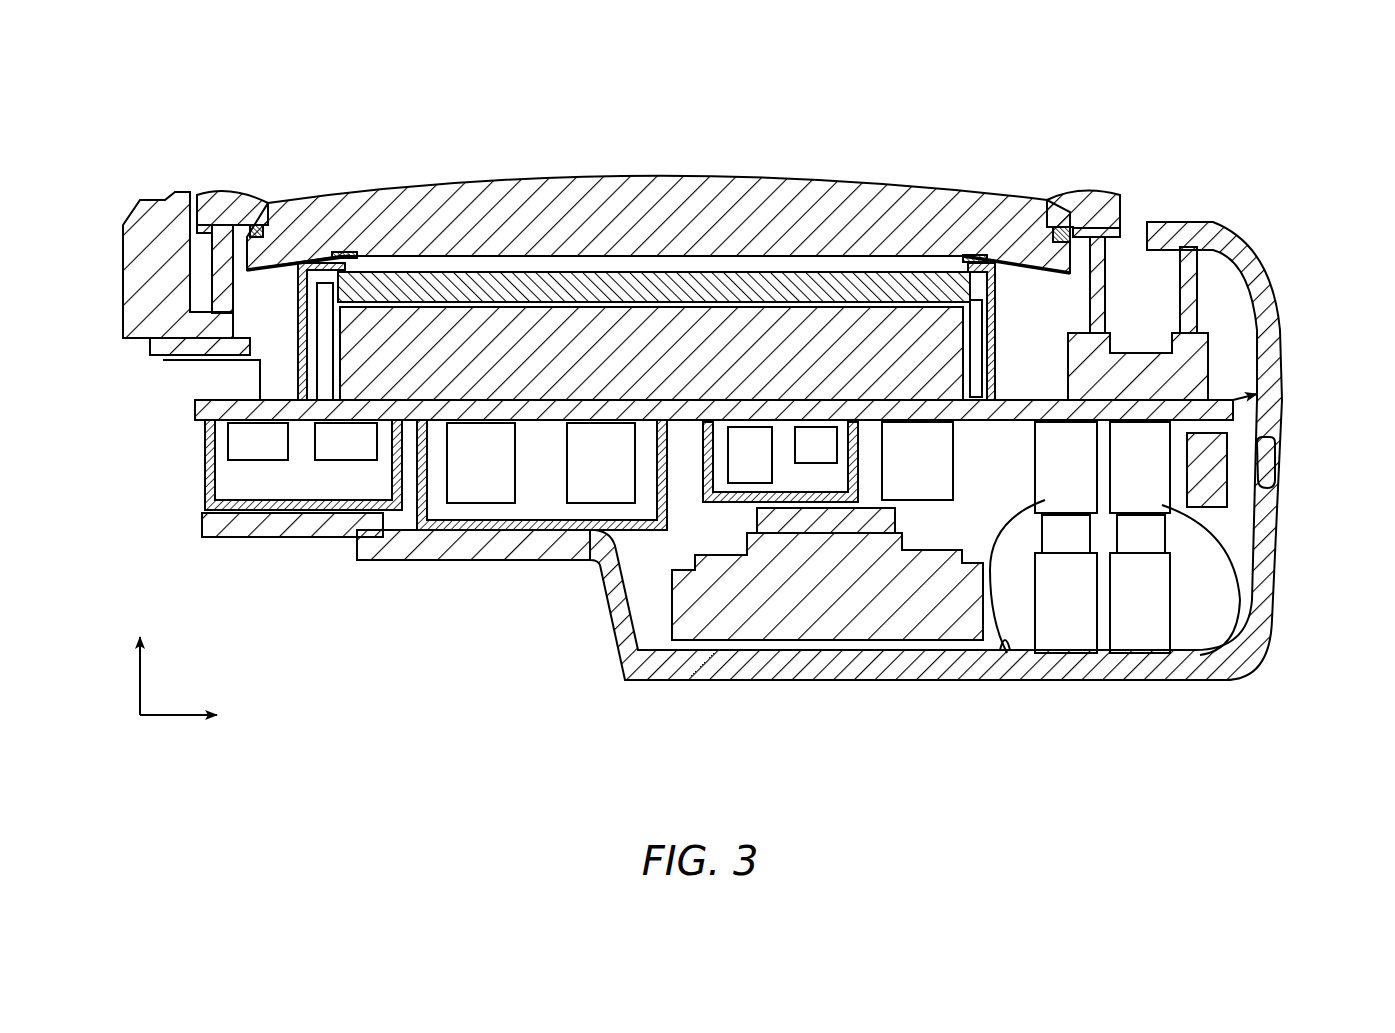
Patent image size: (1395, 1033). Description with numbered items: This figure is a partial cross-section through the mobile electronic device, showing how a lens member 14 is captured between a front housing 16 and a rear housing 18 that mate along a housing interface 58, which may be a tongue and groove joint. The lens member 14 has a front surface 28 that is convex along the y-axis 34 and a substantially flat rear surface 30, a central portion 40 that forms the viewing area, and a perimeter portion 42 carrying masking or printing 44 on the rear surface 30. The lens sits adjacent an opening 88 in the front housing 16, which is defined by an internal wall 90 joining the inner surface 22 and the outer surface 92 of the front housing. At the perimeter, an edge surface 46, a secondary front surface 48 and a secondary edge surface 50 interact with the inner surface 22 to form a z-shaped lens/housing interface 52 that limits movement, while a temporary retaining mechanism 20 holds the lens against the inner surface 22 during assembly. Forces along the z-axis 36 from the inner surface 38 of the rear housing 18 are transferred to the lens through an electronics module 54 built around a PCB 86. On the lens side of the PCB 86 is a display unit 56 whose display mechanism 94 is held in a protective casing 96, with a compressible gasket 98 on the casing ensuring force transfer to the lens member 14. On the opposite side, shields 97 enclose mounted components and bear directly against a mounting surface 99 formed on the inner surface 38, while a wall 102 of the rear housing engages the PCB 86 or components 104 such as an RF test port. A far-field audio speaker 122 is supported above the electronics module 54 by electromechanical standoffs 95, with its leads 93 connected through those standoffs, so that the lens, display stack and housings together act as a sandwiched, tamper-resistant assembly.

The lens member 14 is at (580, 178).
The front housing 16 is at (1215, 236).
The rear housing 18 is at (1120, 680).
The temporary retaining mechanism 20 is at (297, 215).
The inner surface 22 is at (220, 225).
The front surface 28 is at (528, 180).
The rear surface 30 is at (447, 303).
The y-axis 34 is at (157, 717).
The z-axis 36 is at (140, 695).
The inner surface 38 is at (1007, 640).
The central portion 40 is at (718, 115).
The perimeter portion 42 is at (327, 190).
The masking or printing 44 is at (172, 318).
The edge surface 46 is at (205, 276).
The secondary front surface 48 is at (215, 250).
The secondary edge surface 50 is at (240, 193).
The lens/housing interface 52 is at (262, 180).
The electronics module 54 is at (197, 397).
The display unit 56 is at (390, 385).
The housing interface 58 is at (1288, 440).
The PCB 86 is at (200, 413).
The opening 88 is at (648, 95).
The internal wall 90 is at (258, 226).
The outer surface 92 is at (1283, 372).
The leads 93 is at (943, 495).
The display mechanism 94 is at (603, 293).
The electromechanical standoffs 95 is at (960, 535).
The protective casing 96 is at (298, 360).
The shields 97 is at (208, 470).
The compressible gasket 98 is at (347, 254).
The mounting surface 99 is at (403, 522).
The wall 102 is at (1070, 640).
The components 104 is at (1040, 500).
The far-field audio speaker 122 is at (852, 633).